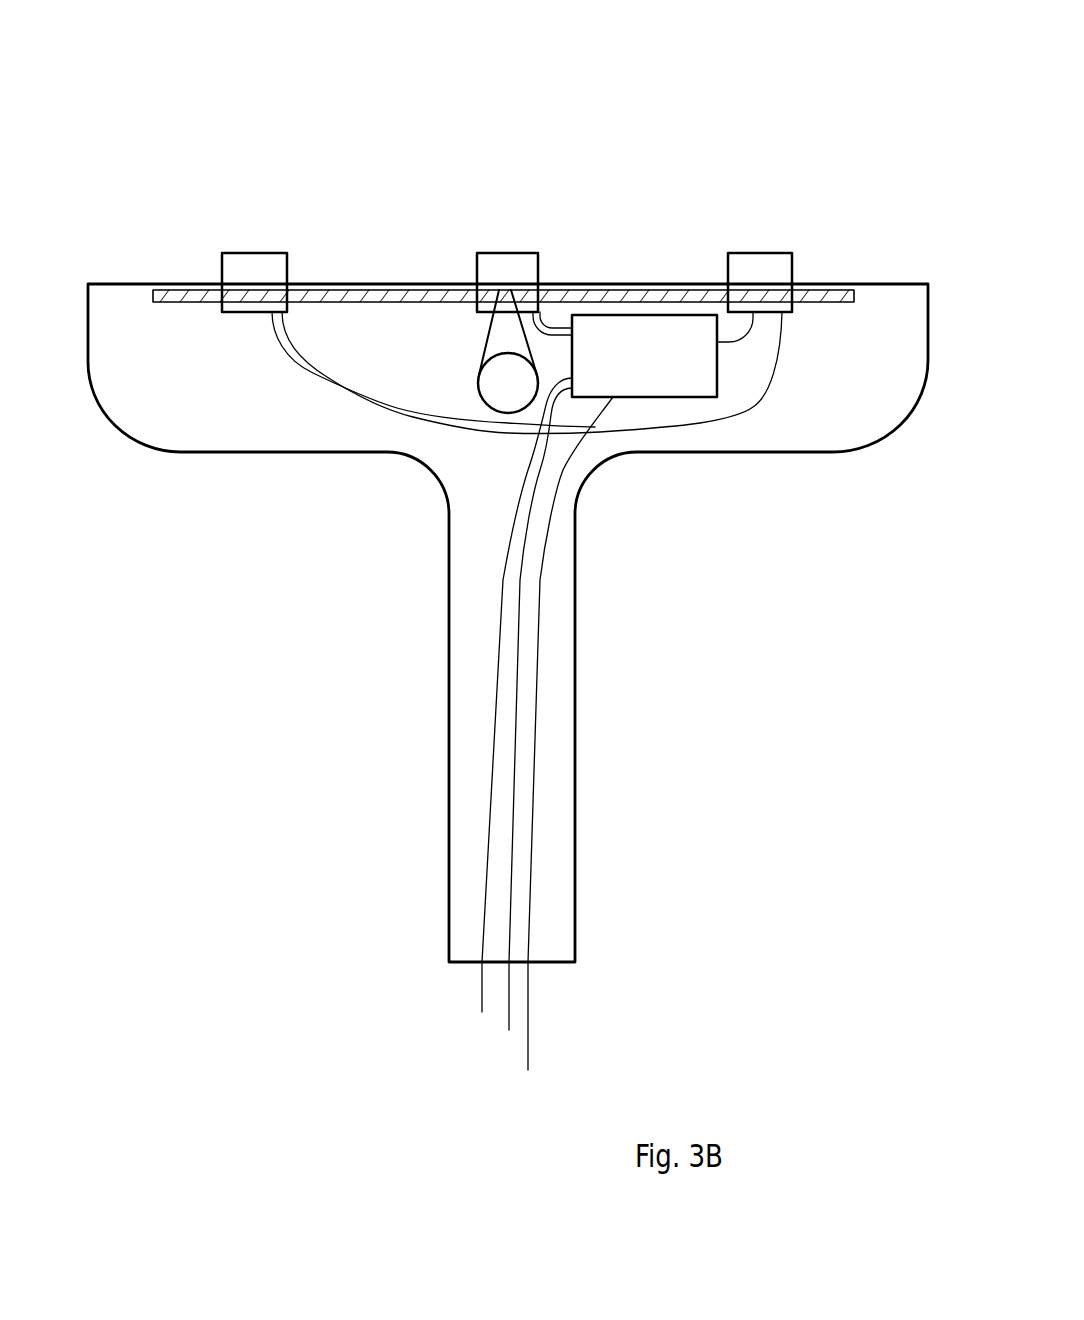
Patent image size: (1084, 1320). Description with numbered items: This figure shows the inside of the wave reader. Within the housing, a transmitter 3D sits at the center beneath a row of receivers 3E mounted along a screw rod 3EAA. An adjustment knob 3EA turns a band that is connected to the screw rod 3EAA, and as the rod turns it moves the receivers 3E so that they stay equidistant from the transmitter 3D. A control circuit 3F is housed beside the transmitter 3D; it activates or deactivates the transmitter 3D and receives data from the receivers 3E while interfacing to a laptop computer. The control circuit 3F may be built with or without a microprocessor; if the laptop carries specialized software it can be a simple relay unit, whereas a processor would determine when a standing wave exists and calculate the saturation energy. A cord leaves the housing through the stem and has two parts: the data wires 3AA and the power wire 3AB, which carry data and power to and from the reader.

The receivers 3E is at (262, 270).
The screw rod 3EAA is at (452, 283).
The transmitter 3D is at (503, 273).
The control circuit 3F is at (637, 378).
The adjustment knob 3EA is at (513, 397).
The data wires 3AA is at (509, 944).
The power wire 3AB is at (528, 1040).